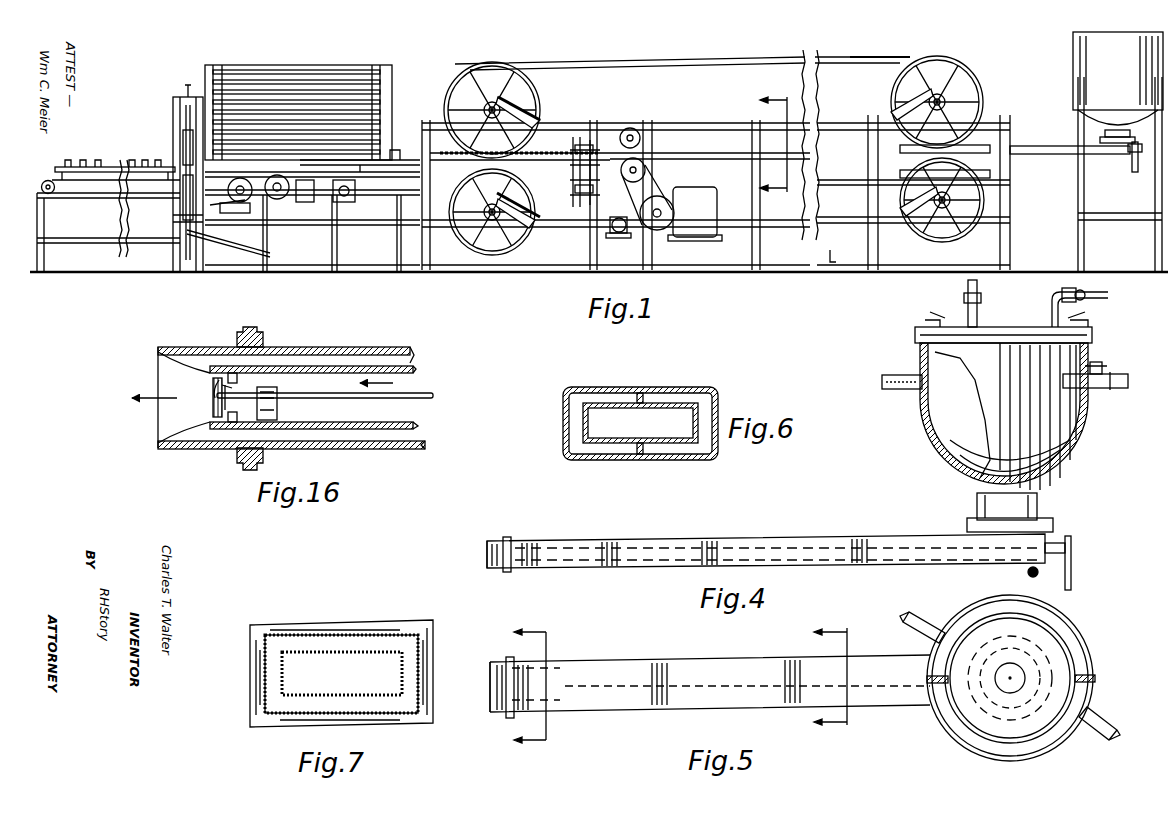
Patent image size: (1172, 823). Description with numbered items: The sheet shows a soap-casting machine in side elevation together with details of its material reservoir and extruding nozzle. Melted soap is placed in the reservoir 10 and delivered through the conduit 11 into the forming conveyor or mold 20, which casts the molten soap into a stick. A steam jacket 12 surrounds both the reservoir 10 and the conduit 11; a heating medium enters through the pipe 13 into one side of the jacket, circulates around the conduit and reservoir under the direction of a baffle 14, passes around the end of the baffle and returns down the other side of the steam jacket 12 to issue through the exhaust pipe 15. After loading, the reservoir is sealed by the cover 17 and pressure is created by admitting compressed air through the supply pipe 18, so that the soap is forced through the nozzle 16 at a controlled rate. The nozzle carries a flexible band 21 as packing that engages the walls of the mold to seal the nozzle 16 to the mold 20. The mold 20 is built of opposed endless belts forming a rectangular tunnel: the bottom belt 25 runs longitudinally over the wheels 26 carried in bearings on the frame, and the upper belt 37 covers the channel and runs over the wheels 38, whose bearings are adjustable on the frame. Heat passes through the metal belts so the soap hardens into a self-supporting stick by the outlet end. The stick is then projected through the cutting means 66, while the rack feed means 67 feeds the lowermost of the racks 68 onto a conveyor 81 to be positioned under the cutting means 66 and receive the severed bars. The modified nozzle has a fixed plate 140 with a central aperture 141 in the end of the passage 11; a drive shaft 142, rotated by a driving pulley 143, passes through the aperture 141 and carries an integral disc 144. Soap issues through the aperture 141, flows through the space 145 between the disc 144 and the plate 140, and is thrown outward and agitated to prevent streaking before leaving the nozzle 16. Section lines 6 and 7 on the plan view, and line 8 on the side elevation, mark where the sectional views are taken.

In FIG. 1, the reservoir 10 is at (1087, 47).
In FIG. 1, the conduit 11 is at (1022, 145).
In FIG. 16, the conduit 11 is at (369, 347).
In FIG. 6, the conduit 11 is at (562, 413).
In FIG. 4, the conduit 11 is at (782, 540).
In FIG. 5, the conduit 11 is at (598, 660).
In FIG. 7, the conduit 11 is at (358, 633).
In FIG. 4, the steam jacket 12 is at (920, 430).
In FIG. 5, the steam jacket 12 is at (1090, 652).
In FIG. 4, the pipe 13 is at (1105, 375).
In FIG. 5, the pipe 13 is at (1118, 734).
In FIG. 6, the baffle 14 is at (645, 392).
In FIG. 5, the baffle 14 is at (700, 683).
In FIG. 4, the exhaust pipe 15 is at (893, 376).
In FIG. 5, the exhaust pipe 15 is at (917, 614).
In FIG. 16, the nozzle 16 is at (157, 362).
In FIG. 4, the nozzle 16 is at (487, 548).
In FIG. 5, the nozzle 16 is at (490, 700).
In FIG. 4, the cover 17 is at (996, 326).
In FIG. 4, the supply pipe 18 is at (1108, 295).
In FIG. 1, the forming conveyor or mold 20 is at (700, 80).
In FIG. 16, the flexible band 21 is at (257, 328).
In FIG. 4, the flexible band 21 is at (509, 537).
In FIG. 5, the flexible band 21 is at (508, 657).
In FIG. 7, the flexible band 21 is at (295, 620).
In FIG. 1, the bottom belt 25 is at (842, 255).
In FIG. 1, the wheels 26 is at (487, 240).
In FIG. 1, the upper belt 37 is at (850, 57).
In FIG. 1, the wheels 38 is at (510, 88).
In FIG. 1, the cutting means 66 is at (190, 84).
In FIG. 1, the rack feed means 67 is at (300, 62).
In FIG. 1, the racks 68 is at (110, 163).
In FIG. 1, the conveyor 81 is at (87, 180).
In FIG. 16, the plate 140 is at (240, 378).
In FIG. 16, the aperture 141 is at (235, 388).
In FIG. 16, the drive shaft 142 is at (425, 393).
In FIG. 4, the driving pulley 143 is at (1072, 541).
In FIG. 16, the disc 144 is at (213, 404).
In FIG. 16, the space 145 is at (228, 425).
In FIG. 5, the section line 6— 6 is at (825, 679).
In FIG. 5, the section line 7— 7 is at (528, 686).
In FIG. 1, the section line 8- 8 is at (771, 147).